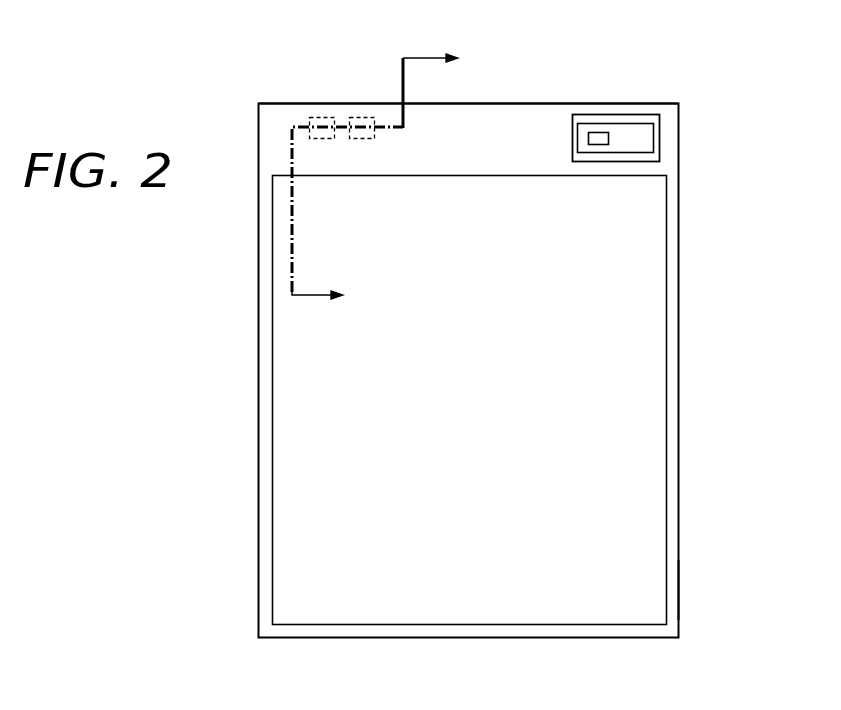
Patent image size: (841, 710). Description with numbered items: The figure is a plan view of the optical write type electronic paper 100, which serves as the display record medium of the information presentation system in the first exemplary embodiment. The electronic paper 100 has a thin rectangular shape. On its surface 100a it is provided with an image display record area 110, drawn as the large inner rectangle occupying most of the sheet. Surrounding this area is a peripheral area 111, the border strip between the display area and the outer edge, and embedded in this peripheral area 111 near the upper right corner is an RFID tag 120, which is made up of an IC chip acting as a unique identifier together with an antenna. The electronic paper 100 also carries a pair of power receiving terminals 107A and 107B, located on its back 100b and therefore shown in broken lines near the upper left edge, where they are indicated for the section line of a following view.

The optical write type electronic paper 100 is at (526, 320).
The surface 100a is at (672, 509).
The back 100b is at (672, 588).
The power receiving terminal 107A is at (318, 117).
The power receiving terminal 107B is at (365, 117).
The image display record area 110 is at (650, 442).
The peripheral area 111 is at (540, 125).
The RFID tag 120 is at (660, 133).